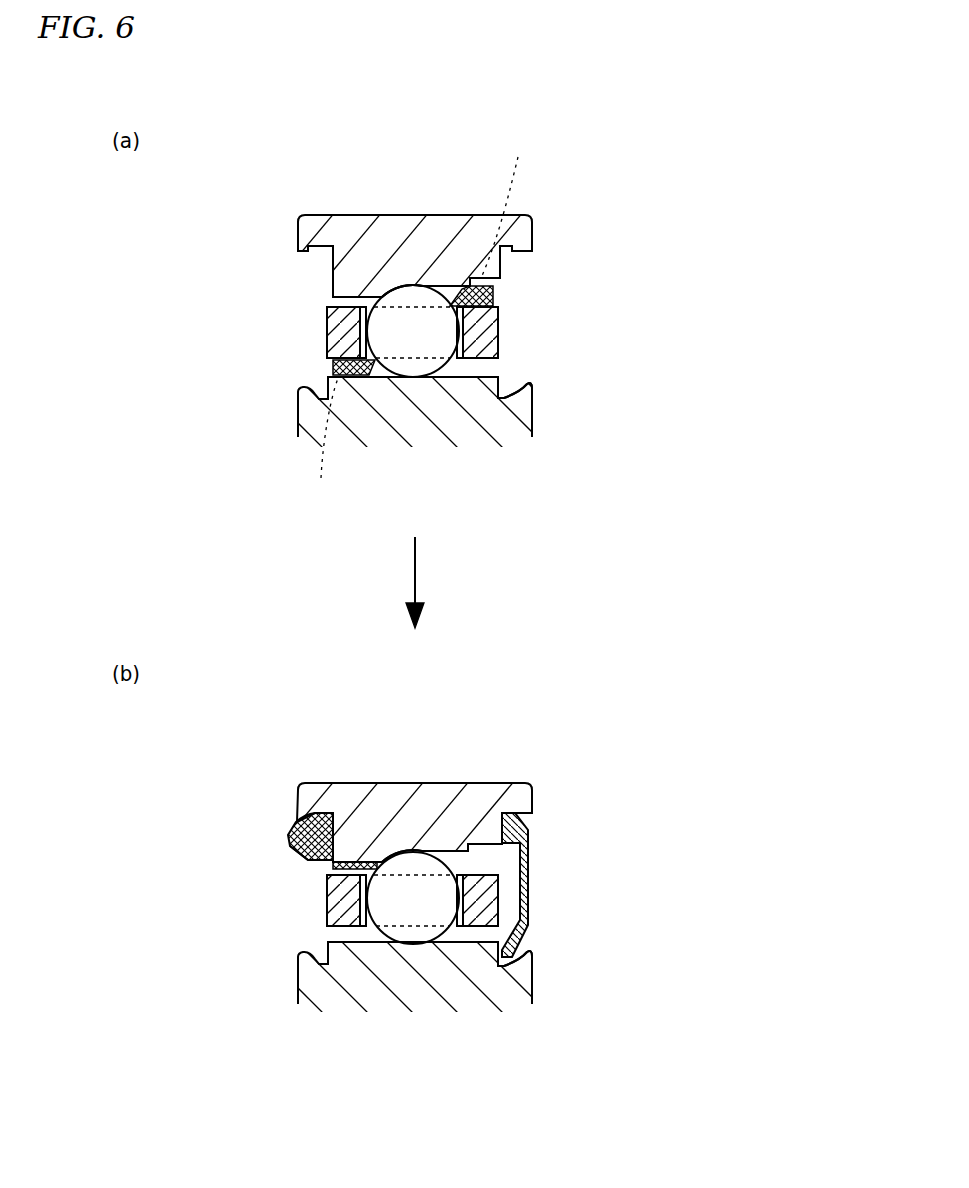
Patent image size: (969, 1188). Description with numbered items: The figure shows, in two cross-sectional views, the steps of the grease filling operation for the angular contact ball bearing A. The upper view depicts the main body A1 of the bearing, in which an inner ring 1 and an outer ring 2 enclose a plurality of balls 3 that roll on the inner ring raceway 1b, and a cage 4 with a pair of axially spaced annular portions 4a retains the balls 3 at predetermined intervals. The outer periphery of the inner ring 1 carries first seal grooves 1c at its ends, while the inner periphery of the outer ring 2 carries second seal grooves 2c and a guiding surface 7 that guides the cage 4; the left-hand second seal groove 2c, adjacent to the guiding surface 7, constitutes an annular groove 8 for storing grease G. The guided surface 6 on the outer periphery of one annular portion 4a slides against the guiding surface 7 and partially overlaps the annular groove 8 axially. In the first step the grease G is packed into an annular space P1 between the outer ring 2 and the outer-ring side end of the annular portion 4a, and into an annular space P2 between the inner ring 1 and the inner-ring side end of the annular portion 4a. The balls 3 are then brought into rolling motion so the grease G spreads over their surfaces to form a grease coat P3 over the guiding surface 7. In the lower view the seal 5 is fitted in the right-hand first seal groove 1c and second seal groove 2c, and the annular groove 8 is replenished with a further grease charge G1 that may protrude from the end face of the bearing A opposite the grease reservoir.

The inner ring 1 is at (388, 424).
The inner ring raceway 1b is at (412, 380).
The first seal groove 1c is at (510, 393).
The outer ring 2 is at (358, 236).
The second seal groove 2c is at (525, 250).
The ball 3 is at (415, 300).
The cage 4 is at (503, 345).
The annular portion 4a is at (328, 347).
The seal 5 is at (530, 852).
The guided surface 6 is at (362, 298).
The guiding surface 7 is at (345, 298).
The annular groove 8 is at (318, 254).
The grease G is at (415, 317).
The seal G1 is at (292, 850).
The annular space P1 is at (502, 284).
The annular space P2 is at (320, 367).
The grease coat P3 is at (333, 870).
The main body of the angular contact ball bearing A1 is at (567, 156).
The angular contact ball bearing A is at (490, 1013).